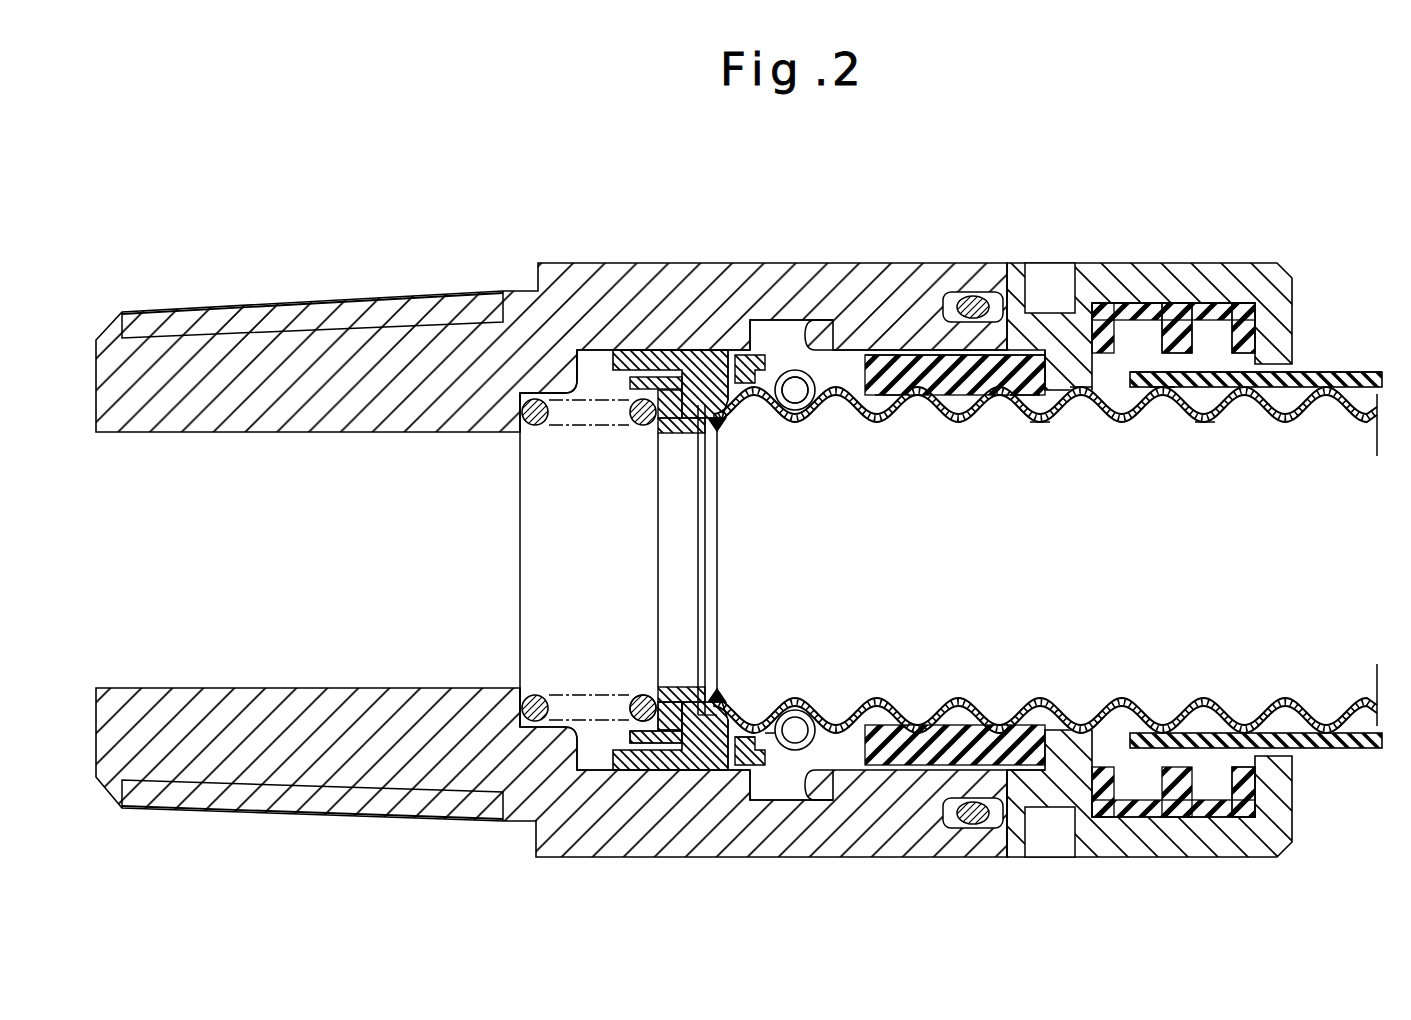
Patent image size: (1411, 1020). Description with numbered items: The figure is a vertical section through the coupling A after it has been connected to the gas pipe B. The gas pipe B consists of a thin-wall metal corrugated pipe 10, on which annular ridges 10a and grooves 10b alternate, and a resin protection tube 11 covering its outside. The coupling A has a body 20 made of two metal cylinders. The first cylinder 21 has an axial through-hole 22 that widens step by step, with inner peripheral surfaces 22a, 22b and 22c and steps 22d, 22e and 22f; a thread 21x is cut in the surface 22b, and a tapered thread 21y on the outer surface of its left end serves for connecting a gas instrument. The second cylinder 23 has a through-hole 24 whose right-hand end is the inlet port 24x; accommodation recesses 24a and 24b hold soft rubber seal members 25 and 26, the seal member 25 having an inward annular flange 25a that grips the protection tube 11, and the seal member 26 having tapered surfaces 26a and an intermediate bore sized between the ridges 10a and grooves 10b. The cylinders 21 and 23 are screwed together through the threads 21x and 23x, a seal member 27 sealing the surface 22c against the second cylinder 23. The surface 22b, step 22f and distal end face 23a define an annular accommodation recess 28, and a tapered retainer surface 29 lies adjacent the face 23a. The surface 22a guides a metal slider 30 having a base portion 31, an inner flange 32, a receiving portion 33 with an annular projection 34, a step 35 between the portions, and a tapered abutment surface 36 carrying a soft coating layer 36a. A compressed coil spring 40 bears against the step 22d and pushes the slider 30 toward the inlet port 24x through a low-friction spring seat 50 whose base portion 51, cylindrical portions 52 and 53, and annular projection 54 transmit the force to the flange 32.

The corrugated pipe 10 is at (1292, 404).
The annular ridges 10a is at (1062, 385).
The grooves 10b is at (800, 420).
The protection tube 11 is at (1312, 370).
The body 20 is at (661, 242).
The first cylinder 21 is at (556, 258).
The thread 21x is at (893, 800).
The tapered thread 21y is at (320, 302).
The through-hole 22 is at (428, 442).
The inner peripheral surface 22a is at (592, 345).
The inner peripheral surface 22b is at (850, 340).
The inner peripheral surface 22c is at (962, 292).
The step 22d is at (538, 426).
The step 22e is at (583, 375).
The step 22f is at (760, 345).
The second cylinder 23 is at (1184, 258).
The distal end face 23a is at (828, 403).
The thread 23x is at (945, 812).
The through-hole 24 is at (1110, 310).
The accommodation recess 24a is at (1250, 303).
The accommodation recess 24b is at (905, 335).
The inlet port 24x is at (1275, 762).
The seal member 25 is at (1200, 300).
The annular flange 25a is at (1162, 392).
The seal member 26 is at (985, 355).
The tapered surfaces 26a is at (882, 400).
The seal member 27 is at (976, 297).
The accommodation recess 28 is at (812, 330).
The retainer surface 29 is at (814, 406).
The slider 30 is at (636, 352).
The base portion 31 is at (686, 352).
The flange 32 is at (720, 432).
The receiving portion 33 is at (716, 398).
The annular projection 34 is at (740, 385).
The step 35 is at (748, 412).
The abutment surface 36 is at (760, 400).
The coating layer 36a is at (752, 718).
The coil spring 40 is at (534, 693).
The spring seat 50 is at (668, 680).
The base portion 51 is at (632, 695).
The cylindrical portion 52 is at (705, 703).
The cylindrical portion 53 is at (640, 760).
The annular projection 54 is at (692, 755).
The coupling A is at (1248, 245).
The gas pipe B is at (1347, 346).